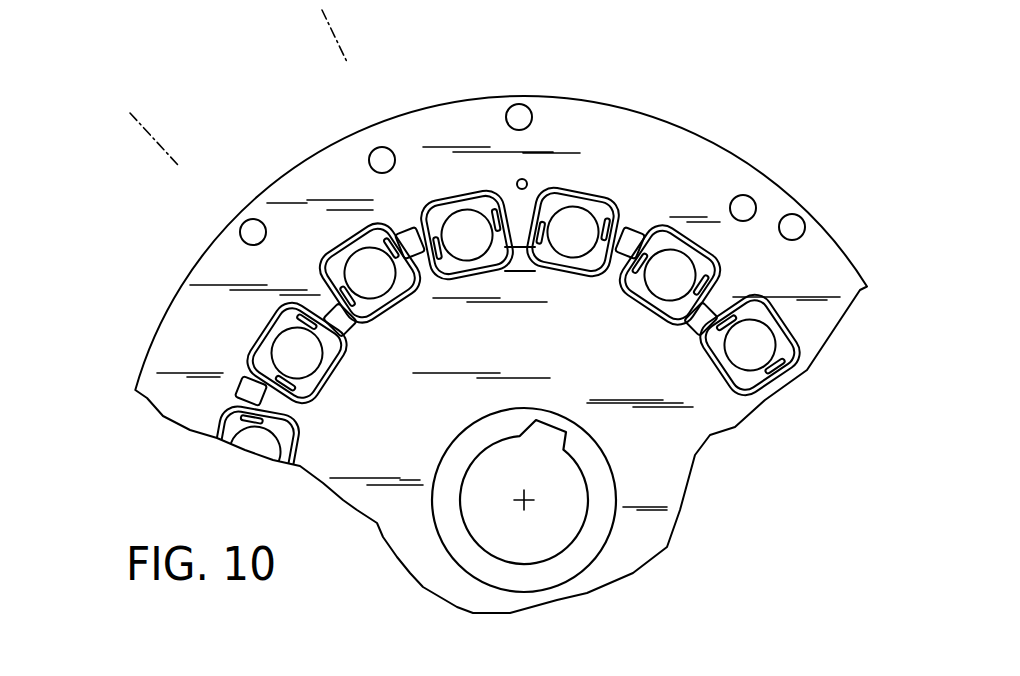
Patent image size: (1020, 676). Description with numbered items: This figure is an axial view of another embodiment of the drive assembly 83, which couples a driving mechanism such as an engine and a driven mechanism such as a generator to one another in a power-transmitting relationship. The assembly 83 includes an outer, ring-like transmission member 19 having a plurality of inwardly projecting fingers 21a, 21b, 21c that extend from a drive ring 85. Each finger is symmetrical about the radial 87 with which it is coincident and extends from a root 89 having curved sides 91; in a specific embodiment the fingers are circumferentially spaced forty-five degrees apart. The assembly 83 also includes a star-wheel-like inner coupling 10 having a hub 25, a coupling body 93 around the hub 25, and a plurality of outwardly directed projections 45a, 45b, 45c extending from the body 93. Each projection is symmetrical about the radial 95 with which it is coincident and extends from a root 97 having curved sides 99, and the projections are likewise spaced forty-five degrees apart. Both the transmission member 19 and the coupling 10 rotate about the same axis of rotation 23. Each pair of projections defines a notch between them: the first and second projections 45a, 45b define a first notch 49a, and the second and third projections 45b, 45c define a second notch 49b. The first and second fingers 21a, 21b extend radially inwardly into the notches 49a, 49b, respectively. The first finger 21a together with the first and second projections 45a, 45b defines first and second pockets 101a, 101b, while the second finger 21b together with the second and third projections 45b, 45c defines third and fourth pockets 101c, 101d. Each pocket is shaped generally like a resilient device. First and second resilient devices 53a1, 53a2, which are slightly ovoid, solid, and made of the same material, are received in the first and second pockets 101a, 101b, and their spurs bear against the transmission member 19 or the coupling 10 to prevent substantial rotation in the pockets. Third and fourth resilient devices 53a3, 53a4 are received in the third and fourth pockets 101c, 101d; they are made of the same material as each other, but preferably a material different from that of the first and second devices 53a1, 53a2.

The inner coupling 10 is at (458, 315).
The transmission member 19 is at (458, 315).
The first finger 21a is at (237, 335).
The second finger 21b is at (521, 222).
The third finger 21c is at (713, 310).
The axis of rotation 23 is at (528, 503).
The hub 25 is at (588, 536).
The first projection 45a is at (232, 384).
The second projection 45b is at (415, 214).
The third projection 45c is at (630, 240).
The first notch 49a is at (346, 330).
The second notch 49b is at (582, 209).
The first resilient device 53a1 is at (237, 363).
The second resilient device 53a2 is at (352, 318).
The third resilient device 53a3 is at (596, 244).
The fourth resilient device 53a4 is at (587, 258).
The drive assembly 83 is at (140, 322).
The drive ring 85 is at (693, 147).
The radial 87 is at (130, 113).
The root 89 is at (310, 283).
The curved sides 91 is at (448, 239).
The coupling body 93 is at (458, 354).
The radial 95 is at (322, 12).
The root 97 is at (437, 263).
The curved sides 99 is at (363, 239).
The first pocket 101a is at (255, 372).
The second pocket 101b is at (425, 225).
The third pocket 101c is at (453, 214).
The fourth pocket 101d is at (637, 233).